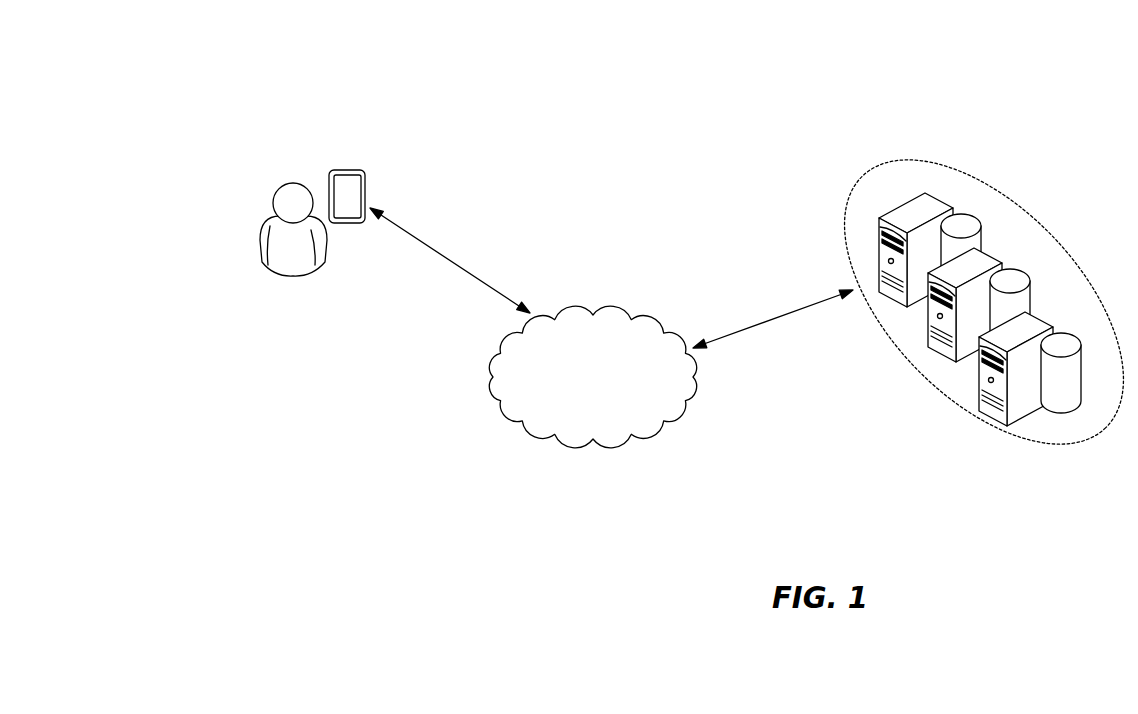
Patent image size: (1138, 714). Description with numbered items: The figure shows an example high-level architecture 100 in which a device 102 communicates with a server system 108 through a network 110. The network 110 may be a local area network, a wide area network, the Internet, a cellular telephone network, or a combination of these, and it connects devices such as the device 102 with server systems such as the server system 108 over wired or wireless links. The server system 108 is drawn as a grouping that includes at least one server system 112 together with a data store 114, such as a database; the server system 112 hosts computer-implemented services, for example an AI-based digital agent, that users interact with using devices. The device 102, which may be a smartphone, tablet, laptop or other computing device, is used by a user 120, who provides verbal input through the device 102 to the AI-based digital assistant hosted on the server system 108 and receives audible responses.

The high-level architecture 100 is at (876, 71).
The device 102 is at (365, 197).
The server system 108 is at (966, 302).
The network 110 is at (593, 307).
The server system 112 is at (907, 200).
The data store 114 is at (962, 210).
The user 120 is at (285, 182).